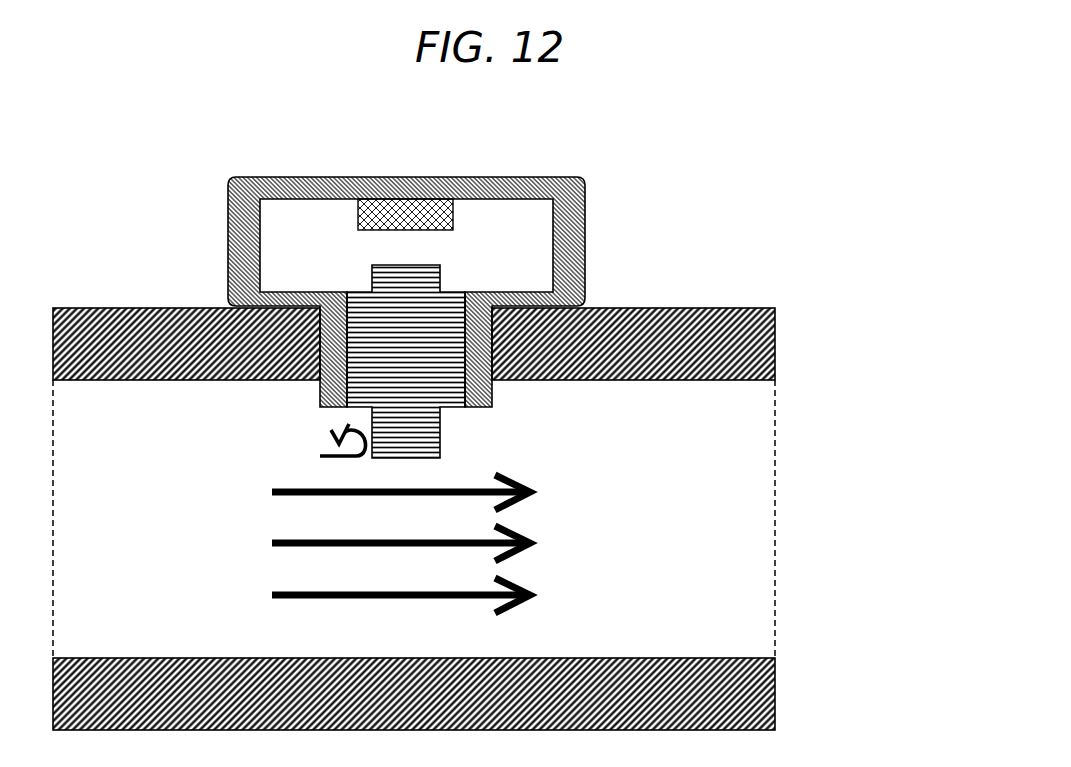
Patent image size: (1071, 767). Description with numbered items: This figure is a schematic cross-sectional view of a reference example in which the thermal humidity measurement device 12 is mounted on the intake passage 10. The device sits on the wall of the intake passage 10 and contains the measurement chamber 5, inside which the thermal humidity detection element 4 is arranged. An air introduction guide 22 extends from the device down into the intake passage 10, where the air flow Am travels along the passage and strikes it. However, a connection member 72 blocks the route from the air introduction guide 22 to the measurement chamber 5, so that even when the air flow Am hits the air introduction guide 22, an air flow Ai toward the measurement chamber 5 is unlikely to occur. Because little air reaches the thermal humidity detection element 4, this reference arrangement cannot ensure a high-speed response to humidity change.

The thermal humidity detection element 4 is at (408, 208).
The measurement chamber 5 is at (278, 219).
The thermal humidity measurement device 12 is at (588, 281).
The air introduction guide 22 is at (385, 300).
The connection member 72 is at (330, 428).
The intake passage 10 is at (768, 491).
The air flow toward the measurement chamber Ai is at (332, 466).
The air flow Am is at (272, 545).